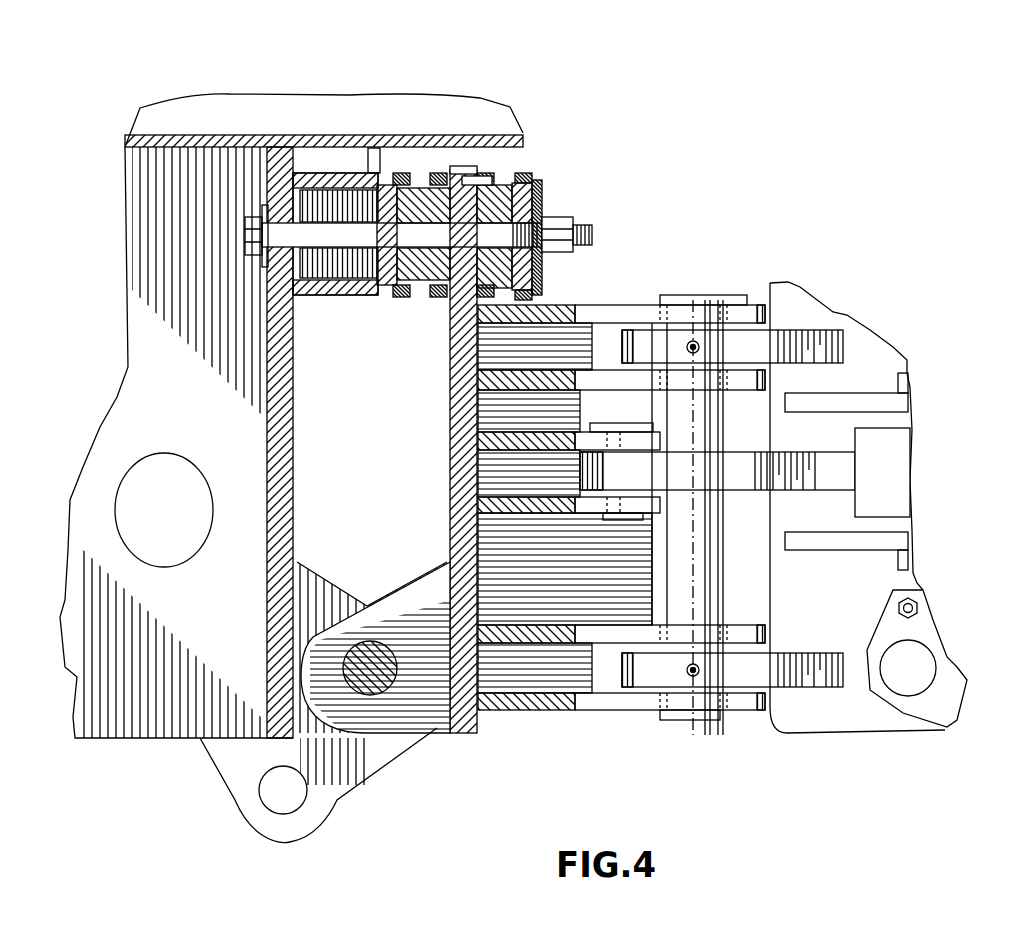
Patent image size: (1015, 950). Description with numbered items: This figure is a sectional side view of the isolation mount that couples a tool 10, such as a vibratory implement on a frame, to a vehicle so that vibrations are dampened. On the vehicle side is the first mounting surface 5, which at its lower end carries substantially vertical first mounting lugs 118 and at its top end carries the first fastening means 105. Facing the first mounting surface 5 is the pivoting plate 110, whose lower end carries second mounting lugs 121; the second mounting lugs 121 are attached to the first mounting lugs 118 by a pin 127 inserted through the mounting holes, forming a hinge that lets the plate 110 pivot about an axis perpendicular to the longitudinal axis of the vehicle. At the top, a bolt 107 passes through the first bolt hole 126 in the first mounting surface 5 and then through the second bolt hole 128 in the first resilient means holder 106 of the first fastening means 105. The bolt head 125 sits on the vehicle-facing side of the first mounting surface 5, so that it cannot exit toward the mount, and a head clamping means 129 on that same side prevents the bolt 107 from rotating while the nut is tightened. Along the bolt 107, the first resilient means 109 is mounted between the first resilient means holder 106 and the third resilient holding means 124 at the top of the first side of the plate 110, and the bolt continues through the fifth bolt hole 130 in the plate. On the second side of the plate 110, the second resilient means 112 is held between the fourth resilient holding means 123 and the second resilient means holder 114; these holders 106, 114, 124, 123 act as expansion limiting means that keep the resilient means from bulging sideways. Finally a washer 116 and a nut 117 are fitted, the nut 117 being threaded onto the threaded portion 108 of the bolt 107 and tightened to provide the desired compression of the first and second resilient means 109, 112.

The first mounting surface 5 is at (280, 375).
The tool 10 is at (873, 360).
The first fastening means 105 is at (347, 183).
The first resilient means holders 106 is at (400, 175).
The bolt 107 is at (427, 236).
The threaded portion 108 is at (545, 290).
The first resilient means 109 is at (458, 168).
The plate 110 is at (512, 133).
The second resilient means 112 is at (540, 197).
The second resilient means holders 114 is at (522, 200).
The washer 116 is at (578, 225).
The nut 117 is at (590, 238).
The first mounting lugs 118 is at (320, 767).
The second mounting lugs 121 is at (425, 693).
The fourth resilient holding means 123 is at (475, 178).
The third resilient holding means 124 is at (440, 173).
The bolt head 125 is at (250, 236).
The first bolt holes 126 is at (283, 230).
The pin 127 is at (370, 672).
The second bolt holes 128 is at (380, 228).
The head clamping means 129 is at (262, 210).
The fifth bolt holes 130 is at (500, 195).